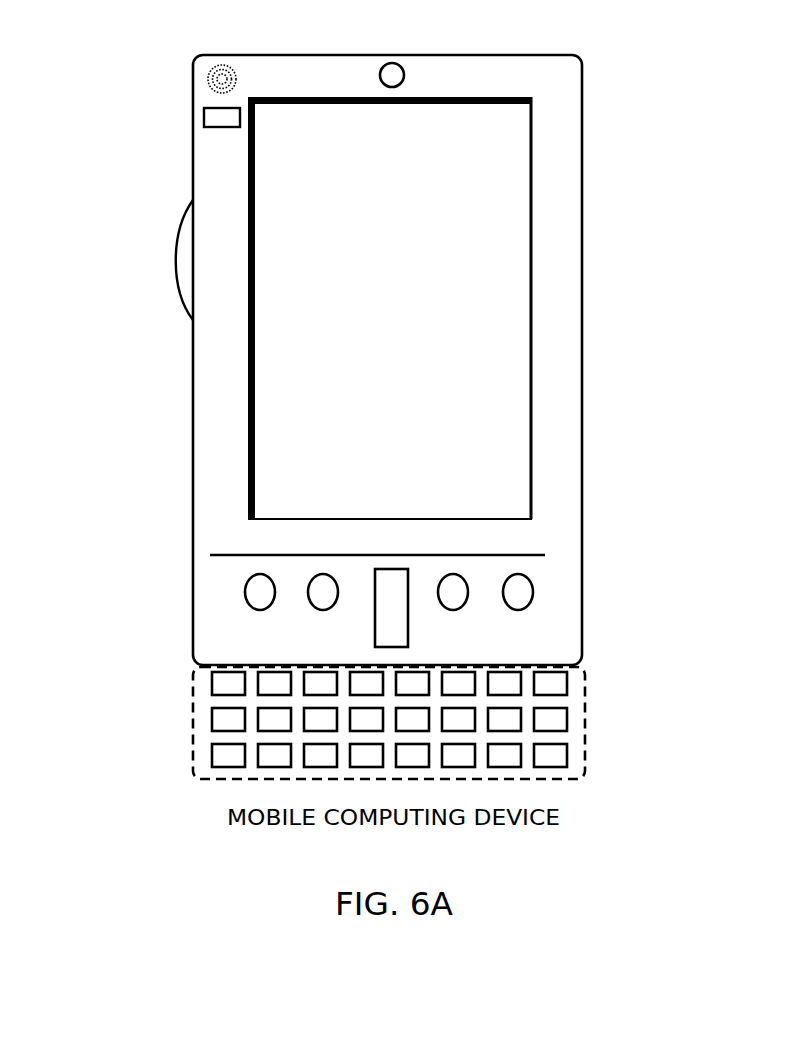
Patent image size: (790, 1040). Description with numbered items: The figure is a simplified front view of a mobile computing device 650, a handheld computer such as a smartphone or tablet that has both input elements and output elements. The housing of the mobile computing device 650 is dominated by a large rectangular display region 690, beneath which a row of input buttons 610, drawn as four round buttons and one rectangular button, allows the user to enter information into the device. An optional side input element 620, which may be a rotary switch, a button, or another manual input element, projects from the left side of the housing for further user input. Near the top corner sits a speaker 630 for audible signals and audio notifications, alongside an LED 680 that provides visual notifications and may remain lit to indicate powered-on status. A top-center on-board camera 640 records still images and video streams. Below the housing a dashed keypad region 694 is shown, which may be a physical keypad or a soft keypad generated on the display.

The input buttons 610 is at (518, 605).
The side input element 620 is at (172, 268).
The speaker 630 is at (203, 67).
The on-board camera 640 is at (400, 71).
The mobile computing device 650 is at (583, 70).
The LED 680 is at (204, 110).
The display screen 690 is at (274, 460).
The keyboard 694 is at (190, 748).